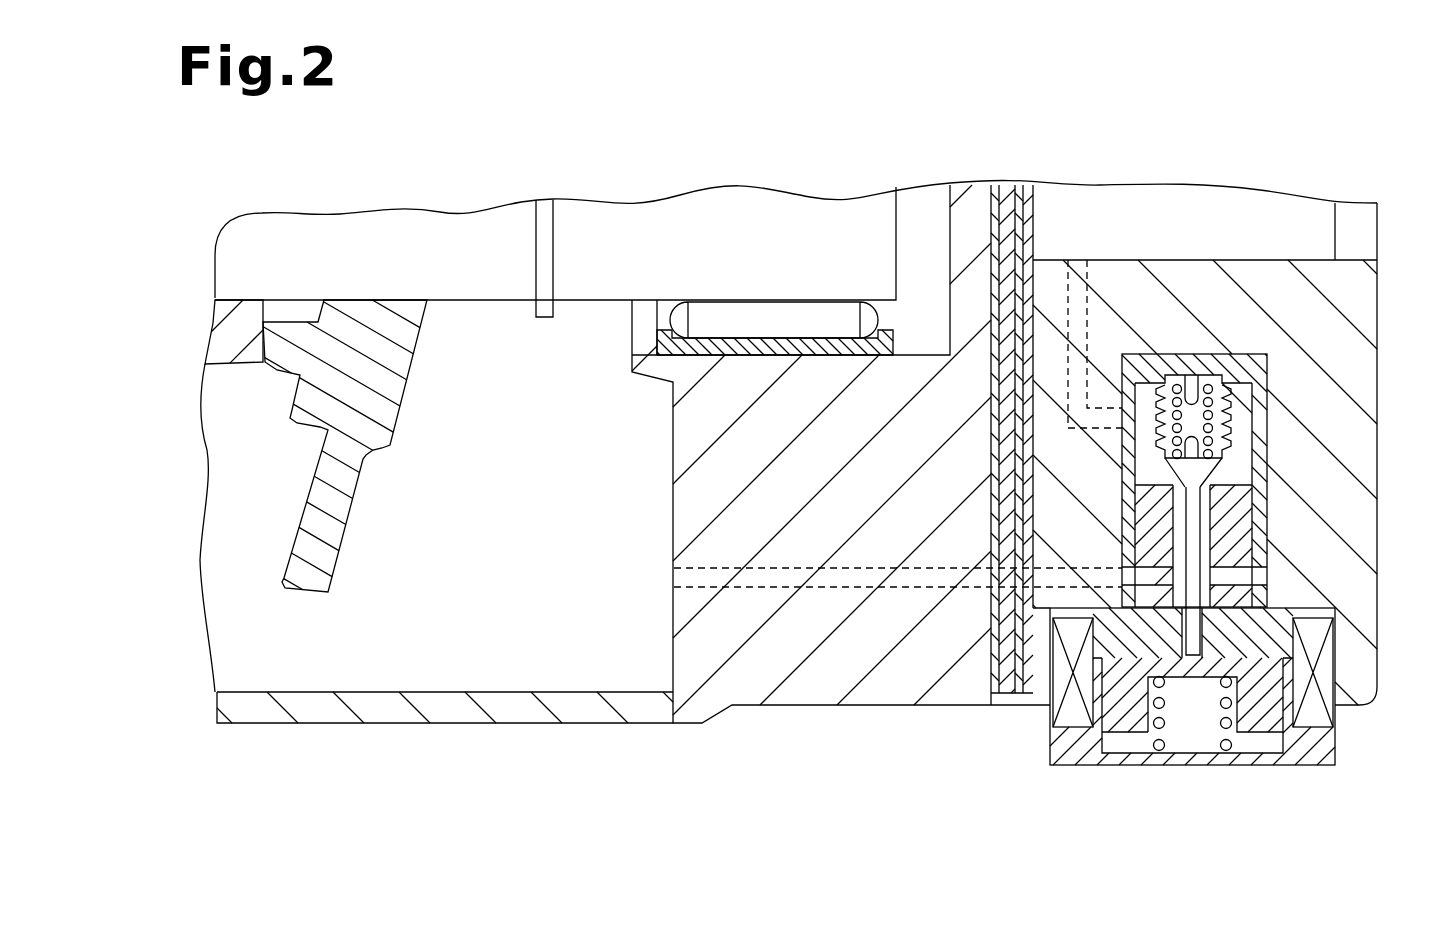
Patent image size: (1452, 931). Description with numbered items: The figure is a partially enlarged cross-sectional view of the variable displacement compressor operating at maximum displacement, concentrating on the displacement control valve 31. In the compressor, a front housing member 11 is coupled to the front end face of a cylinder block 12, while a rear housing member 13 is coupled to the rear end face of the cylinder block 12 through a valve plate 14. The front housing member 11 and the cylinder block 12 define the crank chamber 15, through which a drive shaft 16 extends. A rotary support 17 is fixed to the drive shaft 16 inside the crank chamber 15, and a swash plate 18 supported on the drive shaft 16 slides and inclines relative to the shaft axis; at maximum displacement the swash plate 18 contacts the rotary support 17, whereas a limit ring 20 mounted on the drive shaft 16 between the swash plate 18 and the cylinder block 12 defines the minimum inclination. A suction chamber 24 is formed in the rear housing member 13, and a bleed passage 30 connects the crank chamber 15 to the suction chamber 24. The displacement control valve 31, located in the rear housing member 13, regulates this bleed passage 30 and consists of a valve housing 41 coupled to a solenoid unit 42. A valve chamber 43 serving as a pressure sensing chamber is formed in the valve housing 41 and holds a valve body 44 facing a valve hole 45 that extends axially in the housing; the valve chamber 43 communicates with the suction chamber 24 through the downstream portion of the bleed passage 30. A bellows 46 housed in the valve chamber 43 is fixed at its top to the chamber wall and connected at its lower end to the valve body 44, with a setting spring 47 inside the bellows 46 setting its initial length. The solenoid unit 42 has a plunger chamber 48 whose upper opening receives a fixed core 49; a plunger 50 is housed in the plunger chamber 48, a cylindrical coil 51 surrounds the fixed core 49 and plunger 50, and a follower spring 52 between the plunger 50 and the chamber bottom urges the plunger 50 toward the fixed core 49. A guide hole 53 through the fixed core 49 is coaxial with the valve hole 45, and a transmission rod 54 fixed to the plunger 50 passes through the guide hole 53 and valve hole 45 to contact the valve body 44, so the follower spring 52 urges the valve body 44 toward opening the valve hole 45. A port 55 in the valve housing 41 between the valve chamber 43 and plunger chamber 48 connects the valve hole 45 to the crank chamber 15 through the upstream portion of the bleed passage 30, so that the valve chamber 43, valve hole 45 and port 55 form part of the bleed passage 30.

The front housing member 11 is at (438, 725).
The cylinder block 12 is at (776, 705).
The rear housing member 13 is at (1378, 280).
The valve plate 14 is at (1005, 703).
The crank chamber 15 is at (500, 600).
The drive shaft 16 is at (487, 300).
The rotary support 17 is at (237, 365).
The swash plate 18 is at (283, 590).
The limit ring 20 is at (541, 318).
The suction chamber 24 is at (1190, 239).
The bleed passage 30 is at (1087, 312).
The displacement control valve 31 is at (1033, 767).
The valve housing 41 is at (1267, 383).
The solenoid unit 42 is at (1340, 610).
The valve chamber 43 is at (1233, 427).
The valve body 44 is at (1217, 468).
The valve hole 45 is at (1207, 507).
The bellows 46 is at (1158, 438).
The setting spring 47 is at (1140, 484).
The plunger chamber 48 is at (1277, 745).
The fixed core 49 is at (1333, 609).
The plunger 50 is at (1130, 725).
The coil 51 is at (1328, 717).
The follower spring 52 is at (1172, 730).
The guide hole 53 is at (1195, 640).
The transmission rod 54 is at (1122, 553).
The port 55 is at (1130, 577).